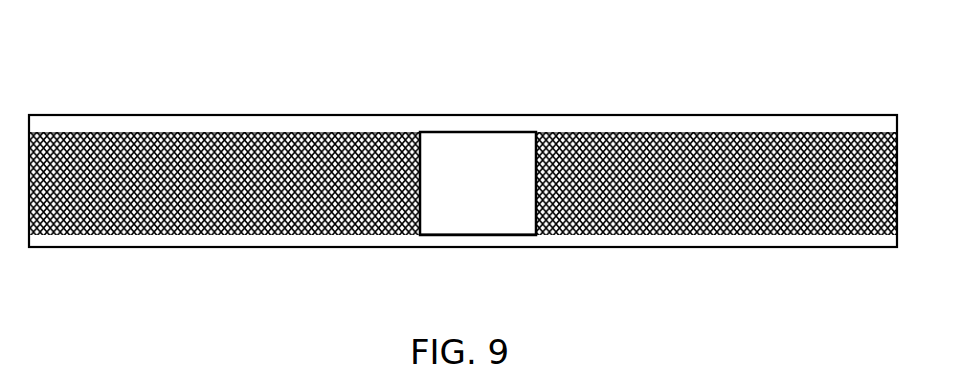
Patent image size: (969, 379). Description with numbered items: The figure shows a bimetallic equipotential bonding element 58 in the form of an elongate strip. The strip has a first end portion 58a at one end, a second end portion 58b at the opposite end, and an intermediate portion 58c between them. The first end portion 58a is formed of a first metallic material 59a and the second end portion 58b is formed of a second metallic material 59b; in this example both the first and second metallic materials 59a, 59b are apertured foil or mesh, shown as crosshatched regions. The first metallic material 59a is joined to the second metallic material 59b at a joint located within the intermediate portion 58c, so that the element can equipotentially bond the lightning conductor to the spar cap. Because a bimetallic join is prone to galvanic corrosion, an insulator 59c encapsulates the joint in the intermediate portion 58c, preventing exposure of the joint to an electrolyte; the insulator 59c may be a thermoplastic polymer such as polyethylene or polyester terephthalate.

The equipotential bonding element 58 is at (101, 73).
The first end portion 58a is at (208, 220).
The second end portion 58b is at (745, 228).
The intermediate portion 58c is at (478, 150).
The first metallic material 59a is at (262, 140).
The second metallic material 59b is at (770, 140).
The insulator 59c is at (478, 220).